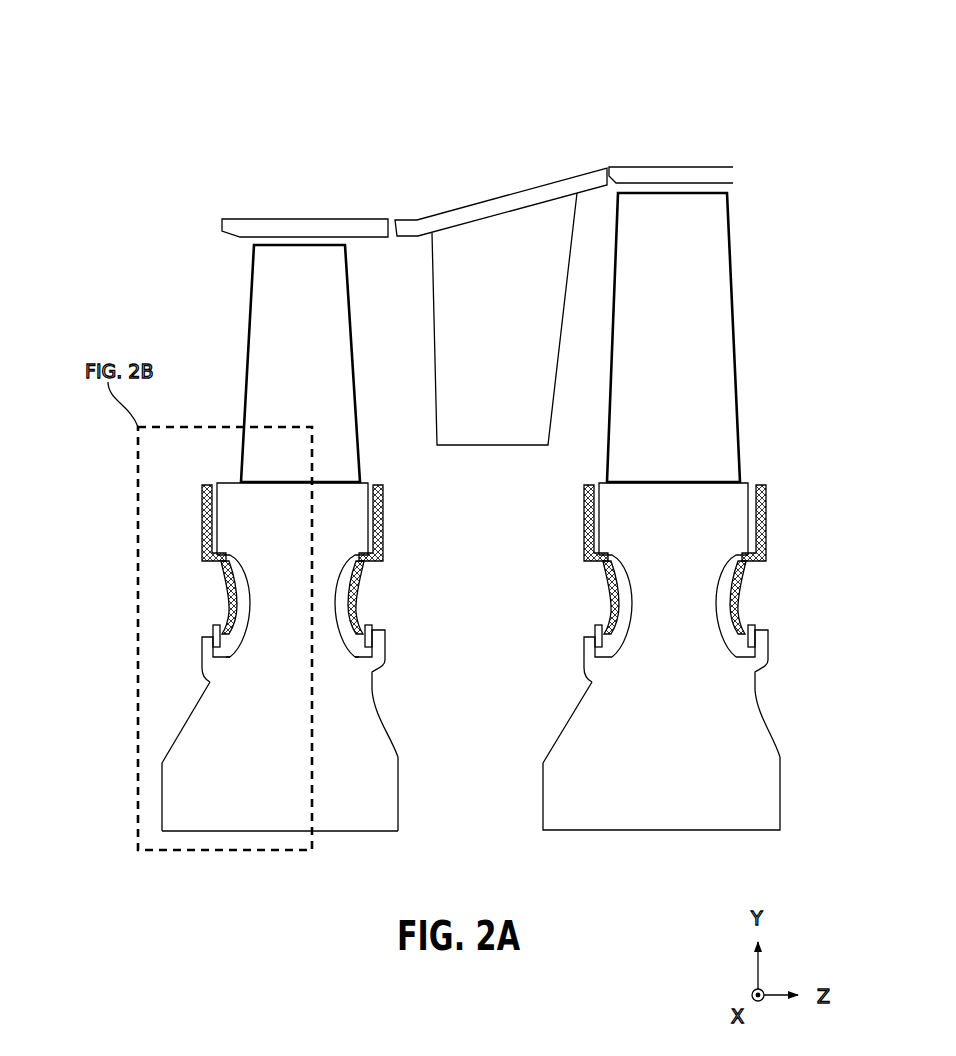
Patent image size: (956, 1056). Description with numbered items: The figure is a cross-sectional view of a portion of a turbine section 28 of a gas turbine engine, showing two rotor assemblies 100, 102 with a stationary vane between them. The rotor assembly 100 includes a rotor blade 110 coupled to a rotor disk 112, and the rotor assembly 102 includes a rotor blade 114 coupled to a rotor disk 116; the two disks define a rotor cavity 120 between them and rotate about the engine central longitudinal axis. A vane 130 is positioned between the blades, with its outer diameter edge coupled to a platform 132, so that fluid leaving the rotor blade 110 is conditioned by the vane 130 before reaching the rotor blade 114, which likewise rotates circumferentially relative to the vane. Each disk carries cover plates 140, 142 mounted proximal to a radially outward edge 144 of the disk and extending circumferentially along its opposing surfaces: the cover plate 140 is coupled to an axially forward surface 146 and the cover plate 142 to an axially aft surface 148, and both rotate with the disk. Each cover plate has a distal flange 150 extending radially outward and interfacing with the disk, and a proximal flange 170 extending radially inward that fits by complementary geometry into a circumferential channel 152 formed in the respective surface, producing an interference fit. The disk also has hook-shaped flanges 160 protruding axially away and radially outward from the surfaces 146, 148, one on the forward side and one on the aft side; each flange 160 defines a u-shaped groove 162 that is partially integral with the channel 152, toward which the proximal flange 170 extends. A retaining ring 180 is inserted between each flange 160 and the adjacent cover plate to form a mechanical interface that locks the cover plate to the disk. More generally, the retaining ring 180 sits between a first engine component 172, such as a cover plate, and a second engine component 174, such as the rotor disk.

The turbine section 28 is at (106, 87).
The rotor assembly 100 is at (225, 175).
The rotor assembly 102 is at (685, 156).
The rotor blade 110 is at (270, 290).
The rotor disk 112 is at (382, 810).
The rotor blade 114 is at (705, 253).
The rotor disk 116 is at (757, 778).
The rotor cavity 120 is at (520, 622).
The vane 130 is at (522, 430).
The platform 132 is at (495, 203).
The cover plate 140 is at (168, 519).
The cover plate 142 is at (423, 545).
The radially outward edge 144 is at (283, 490).
The axially forward surface 146 is at (170, 812).
The axially aft surface 148 is at (400, 780).
The distal flange 150 is at (201, 497).
The channel 152 is at (250, 620).
The flange 160 is at (202, 660).
The groove 162 is at (230, 675).
The proximal flange 170 is at (219, 583).
The first engine component 172 is at (179, 545).
The second engine component 174 is at (172, 767).
The retaining ring 180 is at (212, 634).